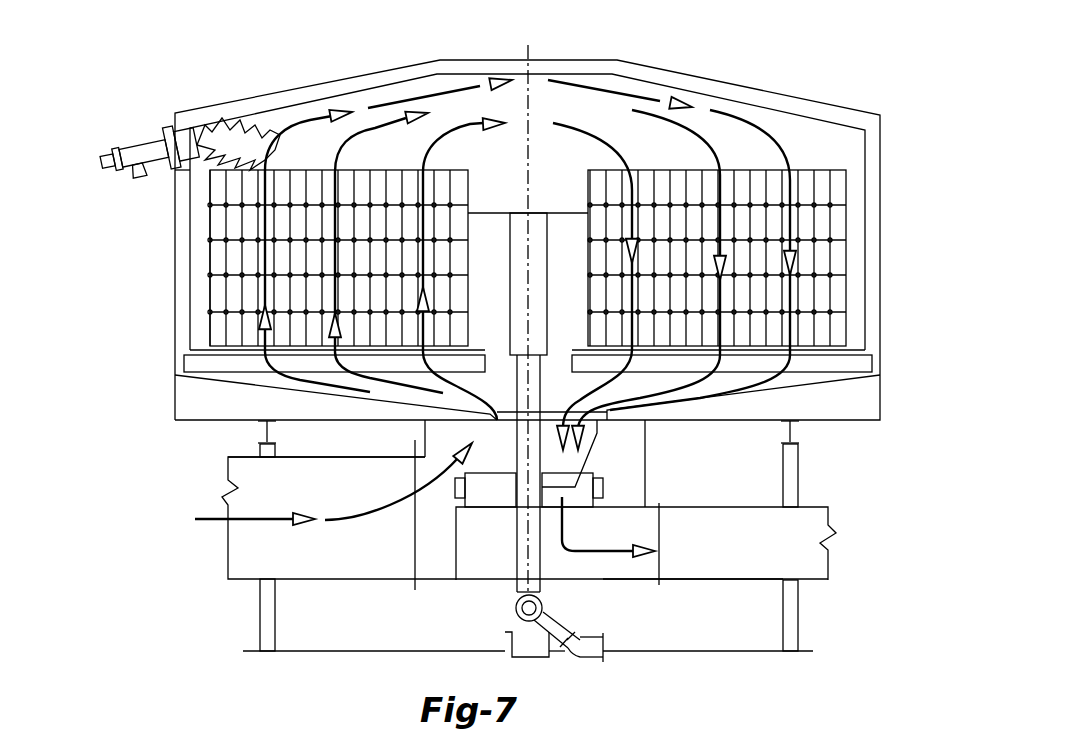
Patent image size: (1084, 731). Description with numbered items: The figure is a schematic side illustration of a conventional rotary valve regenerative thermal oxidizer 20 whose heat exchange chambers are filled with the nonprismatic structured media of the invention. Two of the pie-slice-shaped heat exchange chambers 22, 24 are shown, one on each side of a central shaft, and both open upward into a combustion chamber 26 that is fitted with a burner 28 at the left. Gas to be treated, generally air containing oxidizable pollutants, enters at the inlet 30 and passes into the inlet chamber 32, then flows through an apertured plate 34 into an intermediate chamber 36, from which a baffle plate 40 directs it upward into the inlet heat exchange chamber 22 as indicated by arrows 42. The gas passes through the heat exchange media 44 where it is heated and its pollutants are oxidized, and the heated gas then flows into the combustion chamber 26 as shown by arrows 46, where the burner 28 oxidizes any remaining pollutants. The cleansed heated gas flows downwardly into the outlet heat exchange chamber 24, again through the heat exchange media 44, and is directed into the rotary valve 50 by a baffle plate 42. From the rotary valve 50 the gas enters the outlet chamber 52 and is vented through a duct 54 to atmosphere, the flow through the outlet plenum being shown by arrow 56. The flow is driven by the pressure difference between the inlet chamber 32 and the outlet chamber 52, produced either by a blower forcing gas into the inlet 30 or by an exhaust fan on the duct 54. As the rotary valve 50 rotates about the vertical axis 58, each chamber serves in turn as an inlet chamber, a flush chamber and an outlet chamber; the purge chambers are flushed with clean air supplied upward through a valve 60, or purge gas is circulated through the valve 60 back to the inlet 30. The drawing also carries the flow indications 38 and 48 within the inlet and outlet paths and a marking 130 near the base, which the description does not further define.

The rotary valve regenerative thermal oxidizer 20 is at (745, 63).
The heat exchange chamber 22 is at (200, 248).
The heat exchange chamber 24 is at (860, 183).
The combustion chamber 26 is at (452, 104).
The burner 28 is at (141, 148).
The inlet 30 is at (258, 578).
The inlet chamber 32 is at (428, 565).
The apertured plate 34 is at (478, 422).
The intermediate chamber 36 is at (287, 383).
The inlet air flow 38 is at (345, 522).
The baffle plate 40 is at (357, 390).
The arrows 42 is at (333, 300).
The heat exchange media 44 is at (395, 250).
The arrows 46 is at (362, 128).
The downward gas flow 48 is at (720, 262).
The rotary valve 50 is at (592, 460).
The outlet chamber 52 is at (585, 572).
The duct 54 is at (720, 550).
The arrow 56 is at (612, 555).
The vertical axis 58 is at (528, 557).
The valve 60 is at (578, 650).
The ground support 130 is at (812, 726).